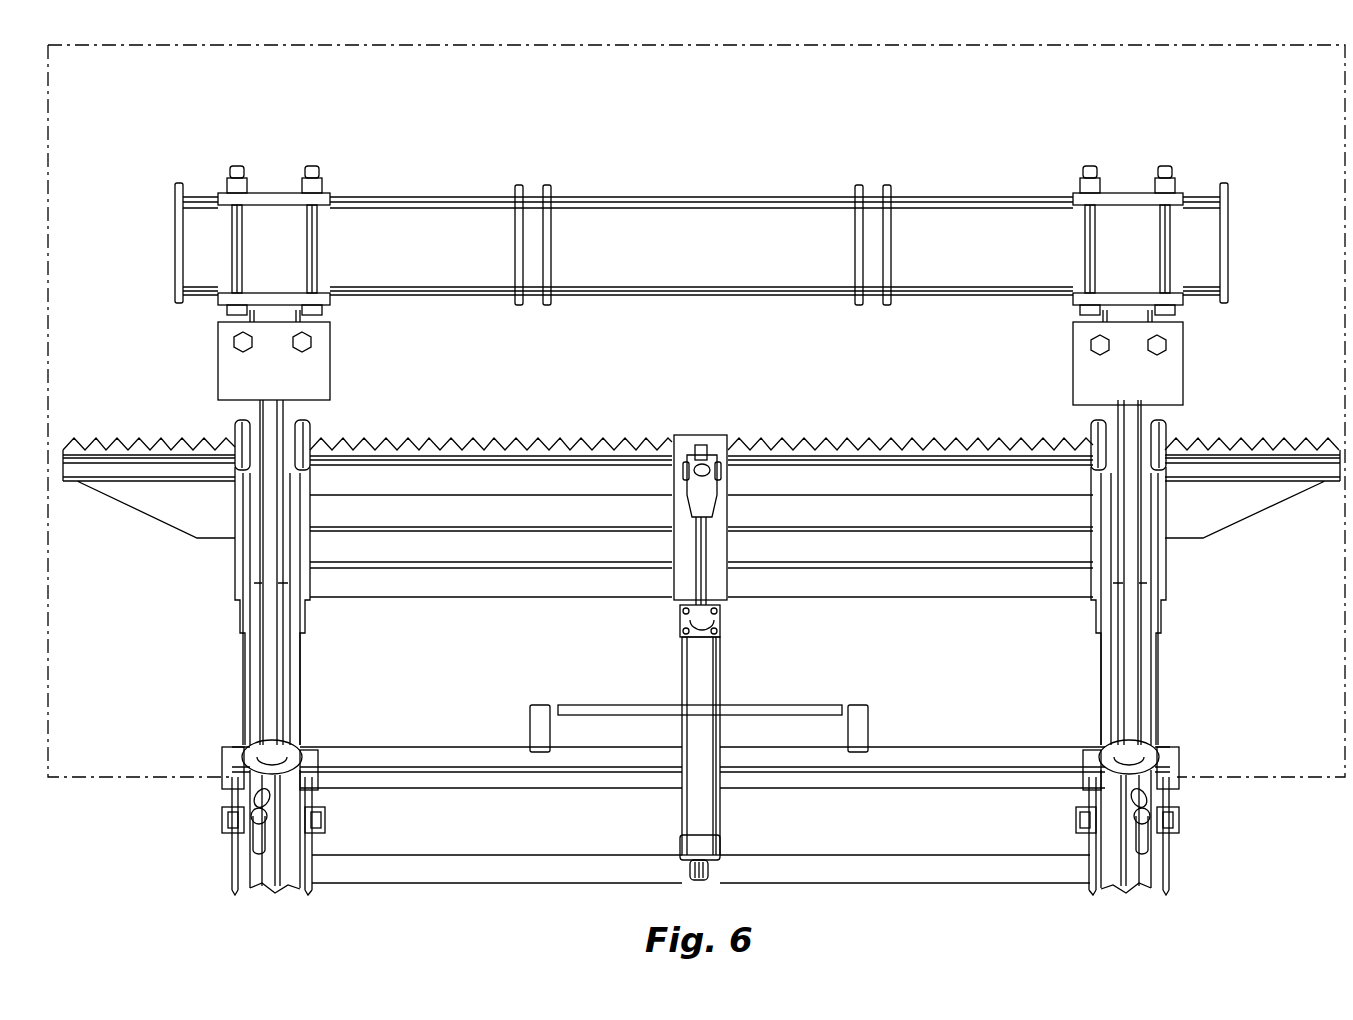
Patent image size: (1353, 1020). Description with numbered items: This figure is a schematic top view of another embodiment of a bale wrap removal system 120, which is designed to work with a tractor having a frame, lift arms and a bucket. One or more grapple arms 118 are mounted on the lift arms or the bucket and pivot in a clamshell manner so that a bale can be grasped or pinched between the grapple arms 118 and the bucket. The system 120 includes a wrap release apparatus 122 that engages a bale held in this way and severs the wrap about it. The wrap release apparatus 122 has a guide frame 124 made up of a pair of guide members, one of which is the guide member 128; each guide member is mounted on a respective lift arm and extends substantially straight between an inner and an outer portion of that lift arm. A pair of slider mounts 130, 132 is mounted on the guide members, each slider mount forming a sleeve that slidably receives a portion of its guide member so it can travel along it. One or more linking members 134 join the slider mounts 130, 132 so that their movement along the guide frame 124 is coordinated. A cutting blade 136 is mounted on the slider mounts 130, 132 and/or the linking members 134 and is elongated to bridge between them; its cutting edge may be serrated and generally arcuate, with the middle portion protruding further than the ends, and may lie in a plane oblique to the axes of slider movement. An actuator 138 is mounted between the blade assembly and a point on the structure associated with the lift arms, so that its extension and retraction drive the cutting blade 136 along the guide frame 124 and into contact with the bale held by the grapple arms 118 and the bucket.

The grapple arm 118 is at (1140, 437).
The system 120 is at (980, 160).
The wrap release apparatus 122 is at (1224, 364).
The guide frame 124 is at (222, 605).
The guide member 128 is at (1152, 680).
The slider mount 130 is at (238, 430).
The slider mount 132 is at (1095, 432).
The linking member 134 is at (910, 595).
The cutting blade 136 is at (542, 446).
The actuator 138 is at (705, 690).